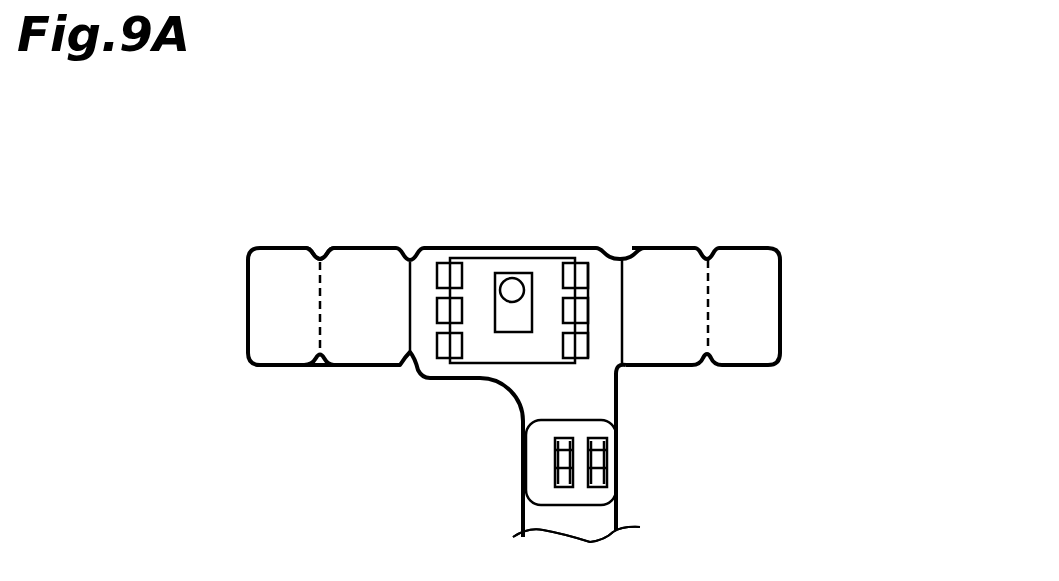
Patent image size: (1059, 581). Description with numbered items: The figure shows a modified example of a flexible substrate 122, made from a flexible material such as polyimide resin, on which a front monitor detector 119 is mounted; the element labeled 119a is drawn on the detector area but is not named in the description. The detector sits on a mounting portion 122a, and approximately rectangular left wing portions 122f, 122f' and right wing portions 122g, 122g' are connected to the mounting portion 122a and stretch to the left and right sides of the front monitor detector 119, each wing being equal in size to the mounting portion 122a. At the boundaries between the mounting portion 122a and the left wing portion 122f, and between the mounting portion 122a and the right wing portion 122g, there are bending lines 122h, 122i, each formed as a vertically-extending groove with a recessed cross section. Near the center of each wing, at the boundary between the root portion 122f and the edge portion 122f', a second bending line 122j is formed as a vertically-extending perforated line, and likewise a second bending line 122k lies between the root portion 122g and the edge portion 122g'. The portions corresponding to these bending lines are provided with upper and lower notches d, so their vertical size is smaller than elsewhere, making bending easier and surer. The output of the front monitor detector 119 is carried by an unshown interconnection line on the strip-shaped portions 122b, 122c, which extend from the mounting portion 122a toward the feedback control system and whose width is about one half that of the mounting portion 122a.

The front monitor detector 119 is at (533, 257).
The electronic component on circuit board 119a is at (517, 333).
The flexible substrate 122 is at (595, 257).
The mounting portion 122a is at (602, 312).
The strip-shaped portion 122b is at (620, 400).
The strip-shaped portion 122c is at (612, 517).
The left wing portion 122f is at (690, 254).
The left wing portion 122f' is at (818, 284).
The right wing portion 122g is at (370, 255).
The right wing portion 122g' is at (272, 255).
The bending line 122h is at (622, 297).
The bending line 122i is at (410, 317).
The second bending line 122j is at (713, 320).
The second bending line 122k is at (318, 325).
The notch d is at (320, 257).